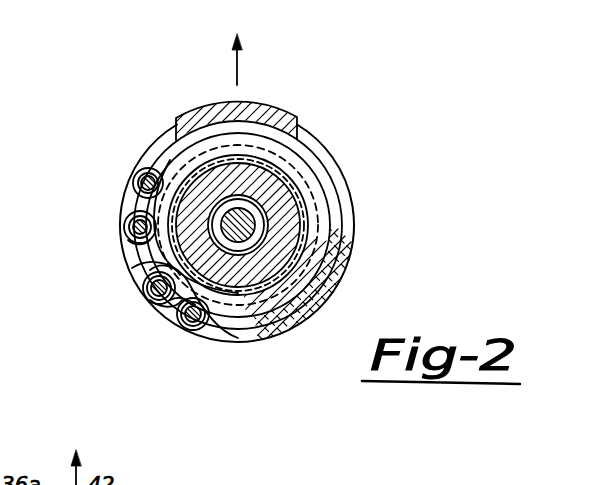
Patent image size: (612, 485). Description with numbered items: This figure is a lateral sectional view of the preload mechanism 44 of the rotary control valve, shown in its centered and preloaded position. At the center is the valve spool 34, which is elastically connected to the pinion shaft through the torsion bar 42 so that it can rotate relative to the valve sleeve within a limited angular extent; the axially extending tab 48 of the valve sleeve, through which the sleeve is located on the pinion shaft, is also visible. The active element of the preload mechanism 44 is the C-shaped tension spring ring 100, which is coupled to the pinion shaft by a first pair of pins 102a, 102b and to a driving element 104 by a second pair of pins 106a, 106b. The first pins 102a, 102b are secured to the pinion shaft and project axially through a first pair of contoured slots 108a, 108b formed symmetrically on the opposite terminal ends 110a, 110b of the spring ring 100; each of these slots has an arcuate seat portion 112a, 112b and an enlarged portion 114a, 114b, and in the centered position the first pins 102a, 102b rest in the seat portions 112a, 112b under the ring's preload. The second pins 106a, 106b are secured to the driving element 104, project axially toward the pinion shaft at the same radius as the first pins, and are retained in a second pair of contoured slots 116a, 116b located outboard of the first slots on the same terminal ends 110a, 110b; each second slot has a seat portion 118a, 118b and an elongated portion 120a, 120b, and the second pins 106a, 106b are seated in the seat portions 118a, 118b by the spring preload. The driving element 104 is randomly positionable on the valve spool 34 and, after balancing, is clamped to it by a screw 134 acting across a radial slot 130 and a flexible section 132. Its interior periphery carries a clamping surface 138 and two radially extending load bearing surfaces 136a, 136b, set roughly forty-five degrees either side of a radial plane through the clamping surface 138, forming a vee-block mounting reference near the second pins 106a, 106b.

The valve spool 34 is at (290, 233).
The torsion bar 42 is at (253, 222).
The preload mechanism 44 is at (418, 173).
The axially extending tab 48 is at (222, 175).
The tension spring ring 100 is at (323, 152).
The driving element 104 is at (340, 172).
The radial slot 130 is at (347, 283).
The flexible section 132 is at (297, 105).
The screw 134 is at (342, 322).
The load bearing surface 136a is at (228, 200).
The load bearing surface 136b is at (240, 325).
The clamping surface 138 is at (267, 200).
The first pin 102a is at (120, 221).
The first pin 102b is at (132, 320).
The second pin 106a is at (188, 322).
The second pin 106b is at (147, 162).
The first contoured slot 108a is at (125, 203).
The first contoured slot 108b is at (142, 322).
The terminal end 110a is at (130, 268).
The terminal end 110b is at (135, 282).
The arcuate seat portion 112a is at (120, 247).
The arcuate seat portion 112b is at (125, 297).
The enlarged portion 114a is at (130, 183).
The enlarged portion 114b is at (158, 322).
The second contoured slot 116a is at (240, 322).
The second contoured slot 116b is at (143, 160).
The seat portion 118a is at (168, 322).
The seat portion 118b is at (127, 162).
The elongated portion 120a is at (230, 320).
The elongated portion 120b is at (206, 150).